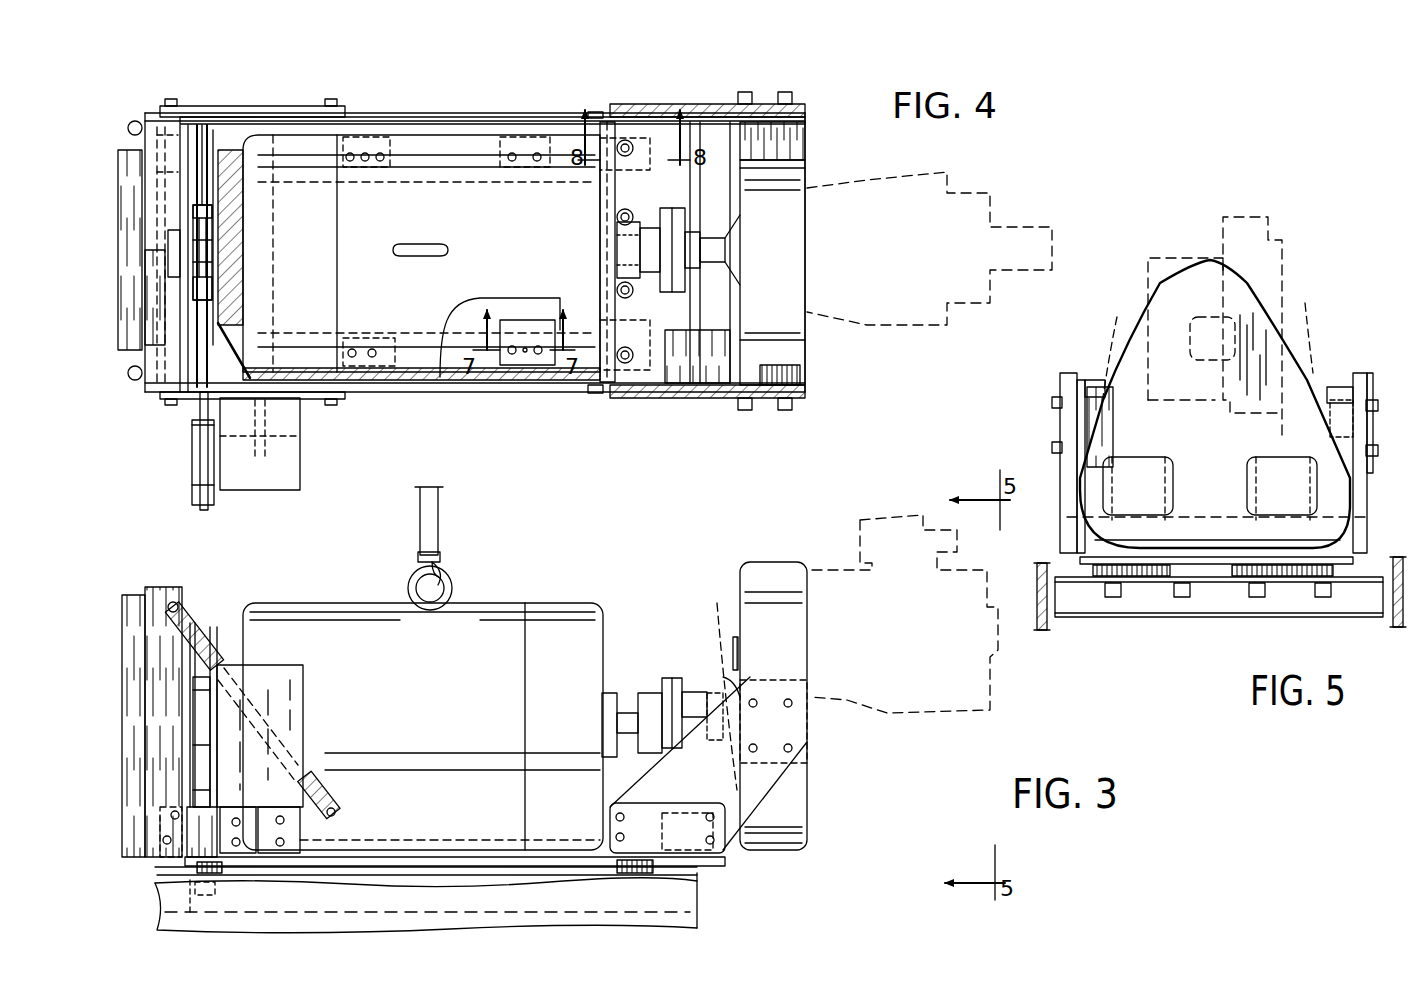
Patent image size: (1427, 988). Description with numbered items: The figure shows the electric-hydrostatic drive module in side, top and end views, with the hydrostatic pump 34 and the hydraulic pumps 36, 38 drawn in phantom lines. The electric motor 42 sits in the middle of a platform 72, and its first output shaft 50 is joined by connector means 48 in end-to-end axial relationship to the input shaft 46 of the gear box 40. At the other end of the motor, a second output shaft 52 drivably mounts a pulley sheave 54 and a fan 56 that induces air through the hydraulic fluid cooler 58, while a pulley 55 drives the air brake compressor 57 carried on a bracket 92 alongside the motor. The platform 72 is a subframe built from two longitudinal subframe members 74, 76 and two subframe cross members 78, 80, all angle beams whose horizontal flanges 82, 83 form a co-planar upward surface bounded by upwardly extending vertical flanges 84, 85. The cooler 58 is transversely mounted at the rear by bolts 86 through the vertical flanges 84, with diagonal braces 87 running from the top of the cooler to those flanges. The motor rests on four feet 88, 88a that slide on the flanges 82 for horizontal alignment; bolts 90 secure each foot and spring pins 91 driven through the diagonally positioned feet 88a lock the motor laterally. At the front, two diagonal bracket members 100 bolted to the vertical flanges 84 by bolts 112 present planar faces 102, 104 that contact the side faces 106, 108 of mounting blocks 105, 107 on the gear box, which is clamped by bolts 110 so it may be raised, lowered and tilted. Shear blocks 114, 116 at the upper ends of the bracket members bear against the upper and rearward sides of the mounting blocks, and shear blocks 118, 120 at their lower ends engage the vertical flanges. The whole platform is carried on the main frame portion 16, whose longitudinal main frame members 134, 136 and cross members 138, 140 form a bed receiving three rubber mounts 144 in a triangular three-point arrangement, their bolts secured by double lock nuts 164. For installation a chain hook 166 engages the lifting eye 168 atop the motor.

In FIG. 3, the main frame portion 16 is at (712, 896).
In FIG. 5, the main frame portion 16 is at (1118, 617).
In FIG. 4, the hydrostatic pump 34 is at (965, 190).
In FIG. 3, the hydrostatic pump 34 is at (858, 522).
In FIG. 5, the hydrostatic pump 34 is at (1260, 215).
In FIG. 5, the hydraulic pump 36 is at (1130, 455).
In FIG. 5, the hydraulic pump 38 is at (1262, 455).
In FIG. 4, the gear box 40 is at (790, 262).
In FIG. 3, the gear box 40 is at (765, 565).
In FIG. 5, the gear box 40 is at (1248, 275).
In FIG. 4, the electric motor 42 is at (416, 148).
In FIG. 3, the electric motor 42 is at (555, 630).
In FIG. 4, the input shaft 46 is at (722, 250).
In FIG. 3, the input shaft 46 is at (708, 693).
In FIG. 4, the connector means 48 is at (676, 212).
In FIG. 3, the connector means 48 is at (668, 680).
In FIG. 4, the first output shaft 50 is at (618, 250).
In FIG. 3, the first output shaft 50 is at (615, 700).
In FIG. 4, the second output shaft 52 is at (168, 246).
In FIG. 4, the pulley sheave 54 is at (192, 215).
In FIG. 3, the pulley sheave 54 is at (200, 690).
In FIG. 4, the pulley 55 is at (198, 410).
In FIG. 3, the pulley 55 is at (200, 722).
In FIG. 4, the fan 56 is at (162, 275).
In FIG. 4, the air brake compressor 57 is at (300, 485).
In FIG. 3, the air brake compressor 57 is at (278, 675).
In FIG. 4, the hydraulic fluid cooler 58 is at (118, 308).
In FIG. 3, the hydraulic fluid cooler 58 is at (122, 600).
In FIG. 3, the platform 72 is at (740, 855).
In FIG. 5, the platform 72 is at (1060, 482).
In FIG. 4, the longitudinal subframe member 74 is at (445, 115).
In FIG. 5, the longitudinal subframe member 74 is at (1350, 578).
In FIG. 4, the longitudinal subframe member 76 is at (512, 398).
In FIG. 3, the longitudinal subframe member 76 is at (452, 833).
In FIG. 5, the longitudinal subframe member 76 is at (1060, 530).
In FIG. 4, the subframe cross member 78 is at (650, 190).
In FIG. 5, the subframe cross member 78 is at (1225, 578).
In FIG. 4, the subframe cross member 80 is at (207, 190).
In FIG. 4, the horizontal flange 82 is at (430, 182).
In FIG. 3, the horizontal flange 82 is at (595, 845).
In FIG. 5, the horizontal flange 82 is at (1118, 560).
In FIG. 4, the horizontal flange 83 is at (200, 200).
In FIG. 4, the vertical flange 84 is at (460, 382).
In FIG. 3, the vertical flange 84 is at (415, 845).
In FIG. 5, the vertical flange 84 is at (1100, 540).
In FIG. 4, the vertical flange 85 is at (230, 152).
In FIG. 5, the vertical flange 85 is at (1196, 520).
In FIG. 3, the bolts 86 is at (164, 840).
In FIG. 4, the diagonal braces 87 is at (298, 106).
In FIG. 3, the diagonal braces 87 is at (200, 640).
In FIG. 4, the feet 88 is at (510, 137).
In FIG. 3, the feet 88 is at (380, 845).
In FIG. 4, the feet 88a is at (370, 135).
In FIG. 3, the feet 88a is at (510, 845).
In FIG. 4, the bolts 90 is at (512, 355).
In FIG. 4, the spring pins 91 is at (515, 320).
In FIG. 3, the spring pins 91 is at (515, 845).
In FIG. 4, the bracket 92 is at (300, 450).
In FIG. 3, the bracket 92 is at (330, 800).
In FIG. 4, the diagonal bracket members 100 is at (720, 104).
In FIG. 3, the diagonal bracket members 100 is at (775, 795).
In FIG. 5, the diagonal bracket members 100 is at (1060, 448).
In FIG. 4, the planar face 102 is at (800, 380).
In FIG. 5, the planar face 102 is at (1092, 380).
In FIG. 4, the planar face 104 is at (800, 118).
In FIG. 5, the planar face 104 is at (1345, 378).
In FIG. 4, the mounting block 105 is at (800, 364).
In FIG. 3, the mounting block 105 is at (805, 775).
In FIG. 5, the mounting block 105 is at (1080, 380).
In FIG. 4, the side face 106 is at (800, 395).
In FIG. 5, the side face 106 is at (1060, 412).
In FIG. 4, the mounting block 107 is at (800, 142).
In FIG. 5, the mounting block 107 is at (1353, 385).
In FIG. 4, the side face 108 is at (800, 106).
In FIG. 5, the side face 108 is at (1378, 385).
In FIG. 4, the bolts 110 is at (786, 92).
In FIG. 3, the bolts 110 is at (792, 748).
In FIG. 5, the bolts 110 is at (1052, 447).
In FIG. 4, the bolts 112 is at (635, 120).
In FIG. 3, the bolts 112 is at (710, 813).
In FIG. 5, the bolts 112 is at (1105, 570).
In FIG. 4, the shear blocks 114 is at (790, 134).
In FIG. 3, the shear blocks 114 is at (768, 680).
In FIG. 5, the shear blocks 114 is at (1068, 375).
In FIG. 4, the shear blocks 116 is at (780, 150).
In FIG. 3, the shear blocks 116 is at (718, 691).
In FIG. 5, the shear blocks 116 is at (1217, 340).
In FIG. 4, the shear blocks 118 is at (668, 398).
In FIG. 3, the shear blocks 118 is at (612, 812).
In FIG. 5, the shear blocks 118 is at (1095, 500).
In FIG. 4, the shear blocks 120 is at (612, 104).
In FIG. 3, the shear blocks 120 is at (560, 845).
In FIG. 3, the longitudinal main frame member 134 is at (338, 909).
In FIG. 5, the longitudinal main frame member 134 is at (1042, 632).
In FIG. 5, the longitudinal main frame member 136 is at (1396, 630).
In FIG. 3, the front cross member 138 is at (690, 920).
In FIG. 5, the front cross member 138 is at (1215, 617).
In FIG. 3, the rear cross member 140 is at (185, 908).
In FIG. 4, the rubber mounts 144 is at (215, 215).
In FIG. 3, the rubber mounts 144 is at (197, 867).
In FIG. 5, the rubber mounts 144 is at (1205, 577).
In FIG. 5, the double lock nuts 164 is at (1180, 597).
In FIG. 3, the chain hook 166 is at (438, 560).
In FIG. 4, the lifting eye 168 is at (448, 246).
In FIG. 3, the lifting eye 168 is at (452, 585).